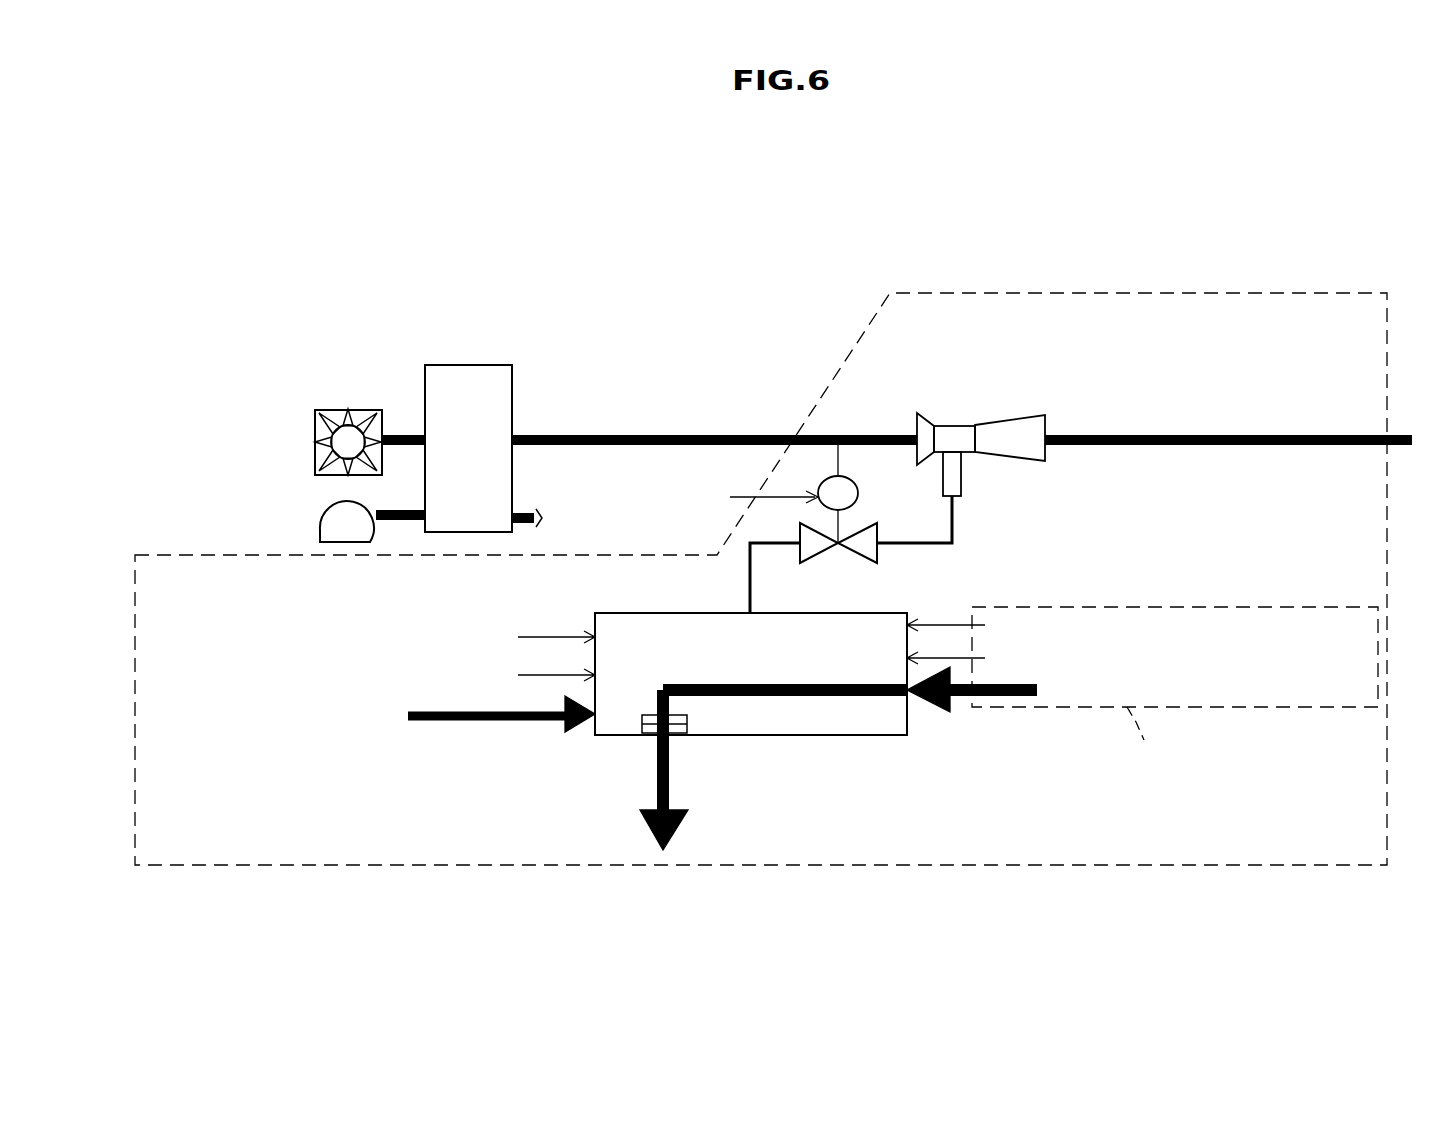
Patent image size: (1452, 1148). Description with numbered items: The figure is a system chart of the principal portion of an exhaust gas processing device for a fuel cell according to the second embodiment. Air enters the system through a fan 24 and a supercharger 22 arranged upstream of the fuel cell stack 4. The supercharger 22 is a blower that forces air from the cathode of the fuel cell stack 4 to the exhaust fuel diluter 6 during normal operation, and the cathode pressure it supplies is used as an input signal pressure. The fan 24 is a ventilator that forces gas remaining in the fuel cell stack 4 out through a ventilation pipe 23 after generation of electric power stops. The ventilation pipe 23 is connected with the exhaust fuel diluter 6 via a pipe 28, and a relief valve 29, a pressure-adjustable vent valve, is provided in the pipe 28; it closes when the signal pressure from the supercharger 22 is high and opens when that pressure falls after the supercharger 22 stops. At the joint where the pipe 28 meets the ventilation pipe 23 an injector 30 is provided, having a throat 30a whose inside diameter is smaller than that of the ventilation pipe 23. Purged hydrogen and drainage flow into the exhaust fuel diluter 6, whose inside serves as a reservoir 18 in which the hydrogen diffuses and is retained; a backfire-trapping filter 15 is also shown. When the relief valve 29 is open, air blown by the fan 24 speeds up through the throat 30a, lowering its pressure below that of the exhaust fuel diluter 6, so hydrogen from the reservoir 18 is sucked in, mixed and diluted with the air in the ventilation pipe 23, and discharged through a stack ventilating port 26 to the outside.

The fuel cell stack 4 is at (470, 363).
The supercharger 22 is at (318, 515).
The ventilation pipe 23 is at (725, 435).
The fan 24 is at (315, 425).
The stack ventilating port 26 is at (1412, 436).
The pipe 28 is at (955, 518).
The relief valve 29 is at (838, 476).
The injector 30 is at (955, 422).
The throat 30a is at (956, 439).
The reservoir 18 is at (770, 667).
The backfire-trapping filter 15 is at (657, 717).
The exhaust fuel diluter 6 is at (848, 735).